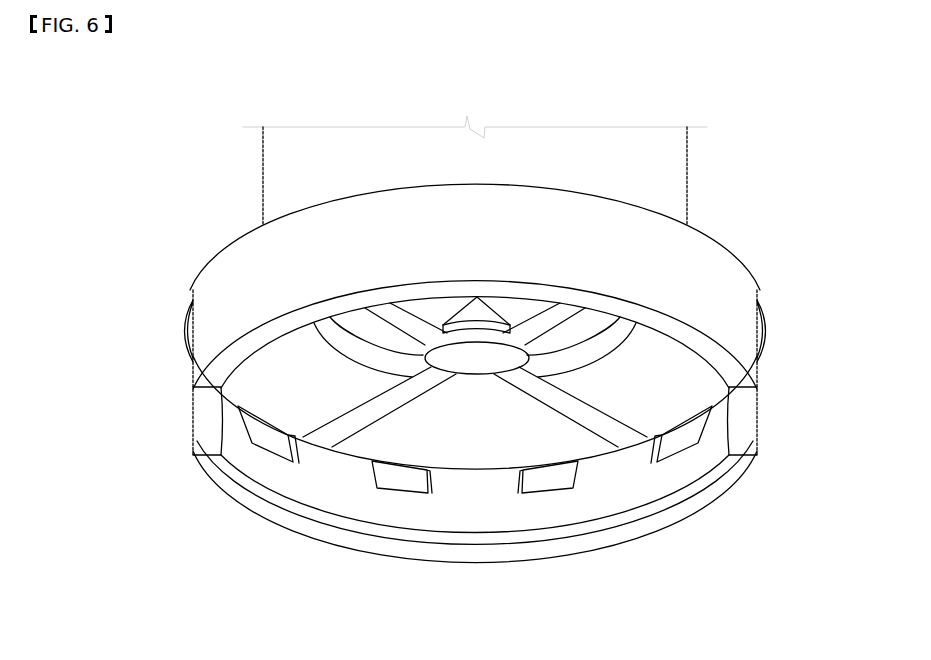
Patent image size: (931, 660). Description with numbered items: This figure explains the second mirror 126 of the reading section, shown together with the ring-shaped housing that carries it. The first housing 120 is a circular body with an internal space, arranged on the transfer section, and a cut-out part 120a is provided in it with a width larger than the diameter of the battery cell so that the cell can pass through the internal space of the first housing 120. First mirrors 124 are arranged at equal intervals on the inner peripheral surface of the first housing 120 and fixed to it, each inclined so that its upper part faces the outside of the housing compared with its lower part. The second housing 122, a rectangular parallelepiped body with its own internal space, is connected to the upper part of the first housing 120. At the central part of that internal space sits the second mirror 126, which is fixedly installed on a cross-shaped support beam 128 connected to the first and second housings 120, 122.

The first housing 120 is at (727, 276).
The cut-out part 120a is at (208, 420).
The second housing 122 is at (682, 169).
The first mirror 124 is at (407, 484).
The second mirror 126 is at (487, 316).
The cross-shaped support beam 128 is at (584, 418).